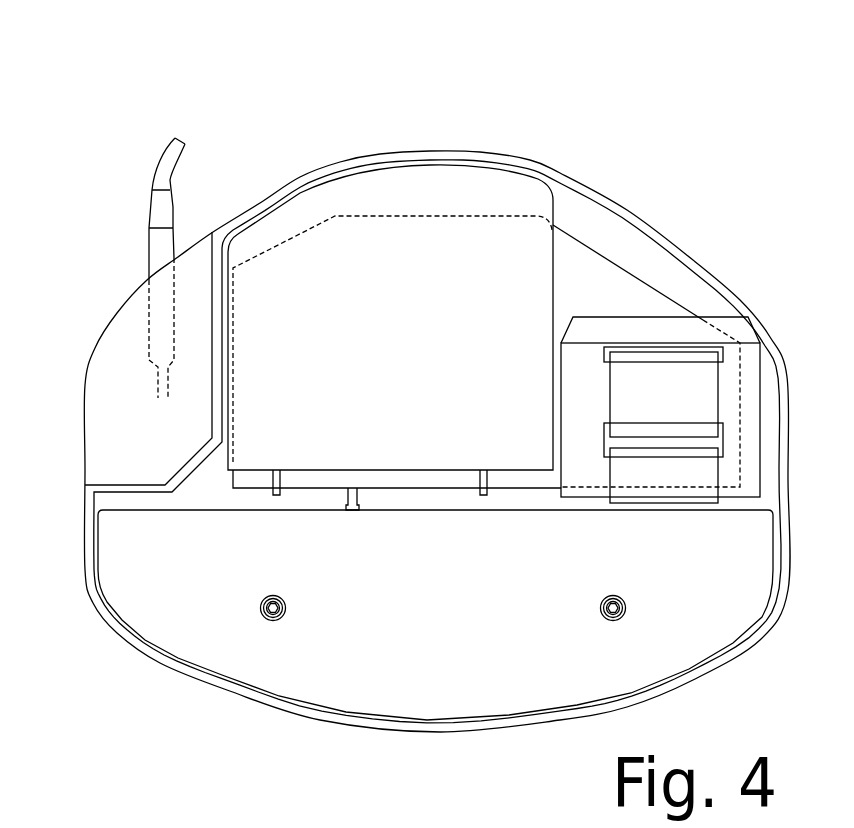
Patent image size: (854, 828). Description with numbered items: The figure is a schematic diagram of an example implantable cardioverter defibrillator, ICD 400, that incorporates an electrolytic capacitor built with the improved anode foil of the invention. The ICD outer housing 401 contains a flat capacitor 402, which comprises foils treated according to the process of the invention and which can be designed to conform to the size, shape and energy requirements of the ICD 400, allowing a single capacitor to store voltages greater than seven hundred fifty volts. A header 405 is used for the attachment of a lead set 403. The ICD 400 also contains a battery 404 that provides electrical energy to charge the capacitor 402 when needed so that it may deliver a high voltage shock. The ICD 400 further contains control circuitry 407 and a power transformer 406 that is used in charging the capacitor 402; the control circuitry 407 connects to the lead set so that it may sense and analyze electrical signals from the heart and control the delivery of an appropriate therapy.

The implantable cardioverter defibrillator 400 is at (418, 143).
The ICD outer housing 401 is at (83, 533).
The flat capacitor 402 is at (435, 615).
The lead set 403 is at (157, 170).
The battery 404 is at (394, 337).
The header 405 is at (83, 407).
The power transformer 406 is at (713, 317).
The control circuitry 407 is at (610, 260).